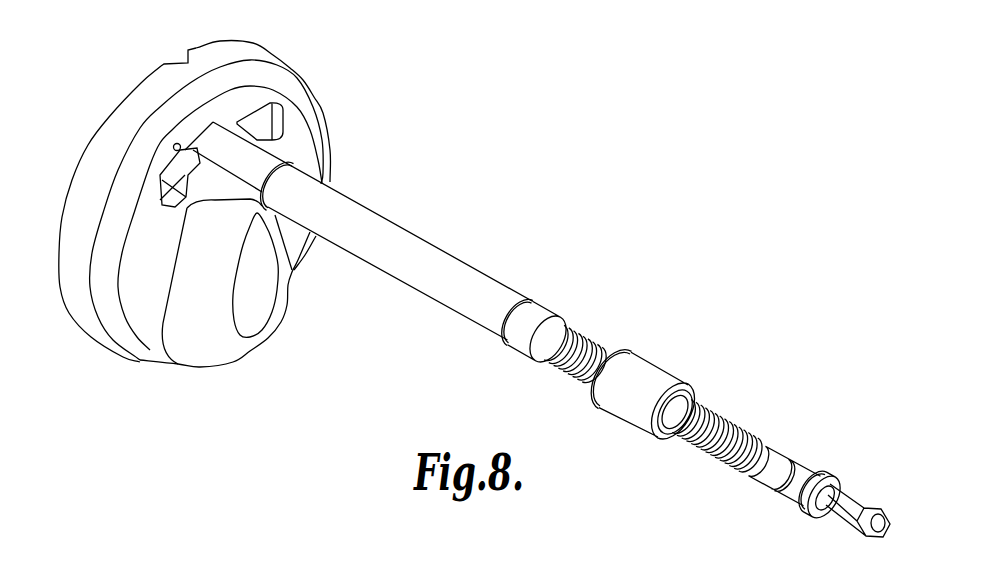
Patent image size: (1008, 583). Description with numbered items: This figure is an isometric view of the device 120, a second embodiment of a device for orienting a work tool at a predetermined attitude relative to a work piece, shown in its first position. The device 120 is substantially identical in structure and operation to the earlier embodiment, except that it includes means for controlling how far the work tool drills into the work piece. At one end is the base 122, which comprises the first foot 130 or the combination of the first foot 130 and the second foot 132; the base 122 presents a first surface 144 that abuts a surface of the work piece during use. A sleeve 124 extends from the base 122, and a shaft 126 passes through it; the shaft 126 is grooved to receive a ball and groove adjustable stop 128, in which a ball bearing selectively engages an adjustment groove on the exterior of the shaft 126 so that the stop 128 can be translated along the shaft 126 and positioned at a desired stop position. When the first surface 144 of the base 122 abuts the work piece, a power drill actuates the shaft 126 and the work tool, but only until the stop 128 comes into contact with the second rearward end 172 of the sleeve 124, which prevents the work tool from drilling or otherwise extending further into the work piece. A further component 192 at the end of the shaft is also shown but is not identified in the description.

The device 120 is at (535, 174).
The base 122 is at (268, 72).
The sleeve 124 is at (362, 203).
The shaft 126 is at (713, 413).
The adjustable stop 128 is at (647, 362).
The first foot 130 is at (251, 351).
The second foot 132 is at (289, 79).
The first surface 144 is at (109, 117).
The second rearward end 172 is at (535, 304).
The drive tip 192 is at (803, 488).